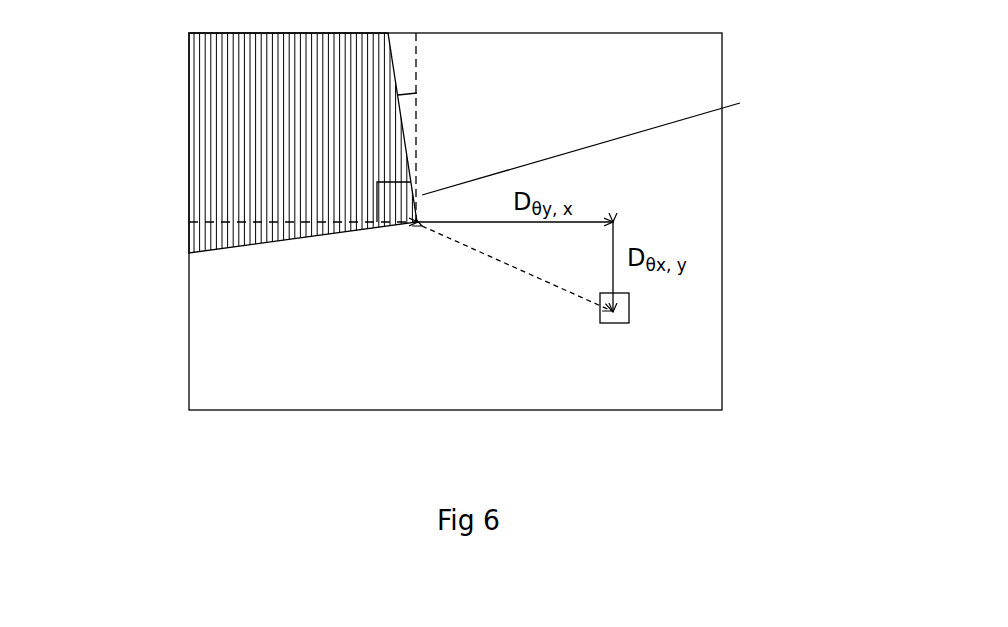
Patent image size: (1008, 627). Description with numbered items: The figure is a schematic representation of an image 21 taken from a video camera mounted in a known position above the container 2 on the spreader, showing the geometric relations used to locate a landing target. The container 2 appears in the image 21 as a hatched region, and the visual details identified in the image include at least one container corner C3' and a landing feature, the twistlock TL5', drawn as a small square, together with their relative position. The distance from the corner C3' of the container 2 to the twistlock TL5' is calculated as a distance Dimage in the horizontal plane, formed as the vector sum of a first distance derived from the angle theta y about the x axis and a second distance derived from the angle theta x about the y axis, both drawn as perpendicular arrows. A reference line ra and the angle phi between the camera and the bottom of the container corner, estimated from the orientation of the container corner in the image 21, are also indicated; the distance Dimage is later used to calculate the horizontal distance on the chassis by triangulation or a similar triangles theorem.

The container 2 is at (233, 145).
The image 21 is at (678, 177).
The container corner C3' is at (244, 294).
The twistlock TL5' is at (695, 323).
The reference axis line ra is at (602, 140).
The distance in the image Dimage is at (507, 274).